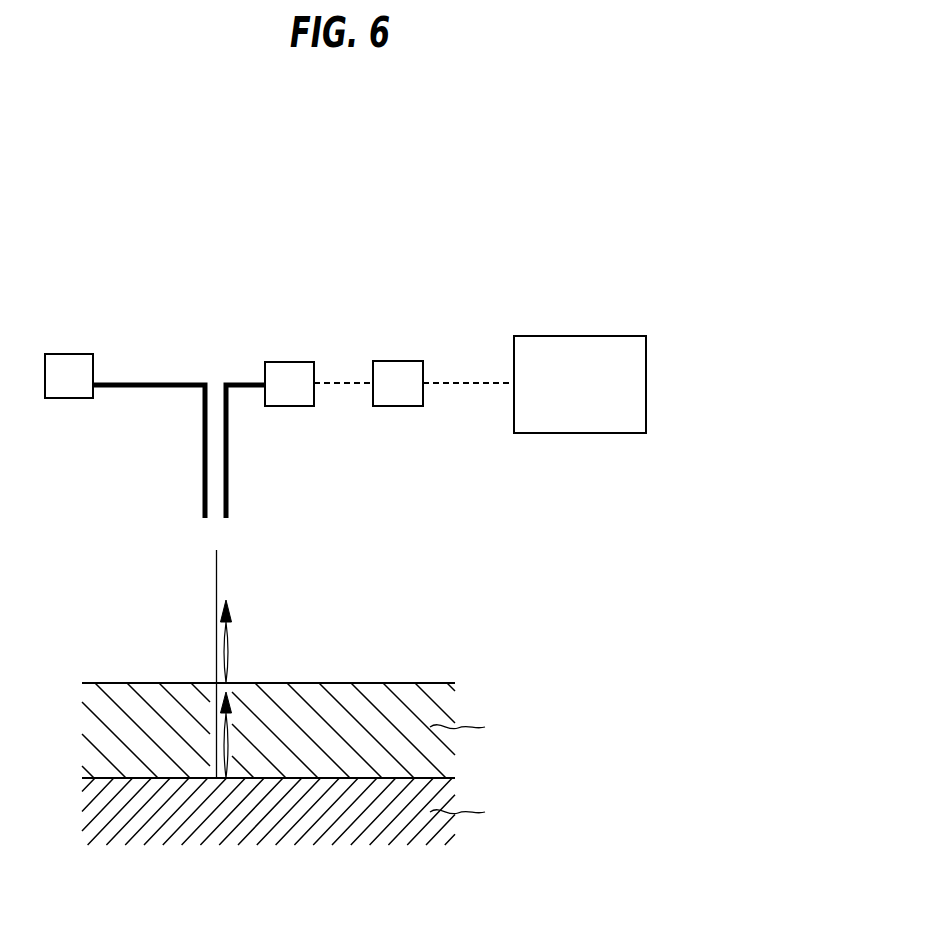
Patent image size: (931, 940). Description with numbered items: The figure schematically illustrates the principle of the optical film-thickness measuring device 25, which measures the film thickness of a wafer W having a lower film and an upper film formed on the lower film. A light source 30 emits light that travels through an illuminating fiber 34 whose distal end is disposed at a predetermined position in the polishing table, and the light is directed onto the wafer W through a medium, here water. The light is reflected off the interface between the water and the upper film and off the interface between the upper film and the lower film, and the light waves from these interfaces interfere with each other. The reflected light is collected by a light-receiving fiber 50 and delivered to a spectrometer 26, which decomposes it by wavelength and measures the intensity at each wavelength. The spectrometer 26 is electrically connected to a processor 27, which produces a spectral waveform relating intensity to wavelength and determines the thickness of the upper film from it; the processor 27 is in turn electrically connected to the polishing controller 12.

The optical film-thickness measuring device 25 is at (329, 240).
The light source 30 is at (70, 354).
The spectrometer 26 is at (290, 362).
The processor 27 is at (403, 361).
The polishing controller 12 is at (585, 336).
The illuminating fiber 34 is at (203, 480).
The light-receiving fiber 50 is at (228, 460).
The wafer W is at (128, 663).